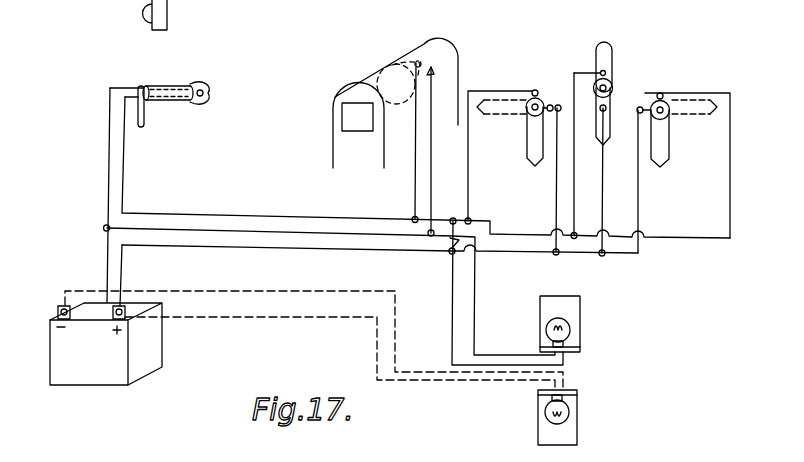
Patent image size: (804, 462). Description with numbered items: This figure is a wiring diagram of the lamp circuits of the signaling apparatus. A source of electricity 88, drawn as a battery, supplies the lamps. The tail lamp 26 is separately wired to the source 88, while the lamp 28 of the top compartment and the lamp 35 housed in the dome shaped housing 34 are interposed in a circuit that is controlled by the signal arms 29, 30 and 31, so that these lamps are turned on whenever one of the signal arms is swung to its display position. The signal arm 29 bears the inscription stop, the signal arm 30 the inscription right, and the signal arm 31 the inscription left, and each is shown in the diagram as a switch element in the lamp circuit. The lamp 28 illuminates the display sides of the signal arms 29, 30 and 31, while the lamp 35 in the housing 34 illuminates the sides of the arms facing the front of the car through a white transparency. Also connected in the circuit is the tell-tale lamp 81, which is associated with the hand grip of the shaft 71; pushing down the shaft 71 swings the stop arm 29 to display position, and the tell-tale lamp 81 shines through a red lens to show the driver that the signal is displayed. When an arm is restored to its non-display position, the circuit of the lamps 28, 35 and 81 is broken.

The tell-tale lamp 81 is at (208, 95).
The vertically reciprocatory and rotatable shaft 71 is at (144, 122).
The dome shaped housing 34 is at (334, 100).
The lamp 35 is at (388, 74).
The signal arm 31 is at (533, 138).
The signal arm 29 is at (598, 138).
The signal arm 30 is at (670, 155).
The lamp 28 is at (576, 337).
The tail lamp 26 is at (572, 415).
The source of electricity 88 is at (148, 366).